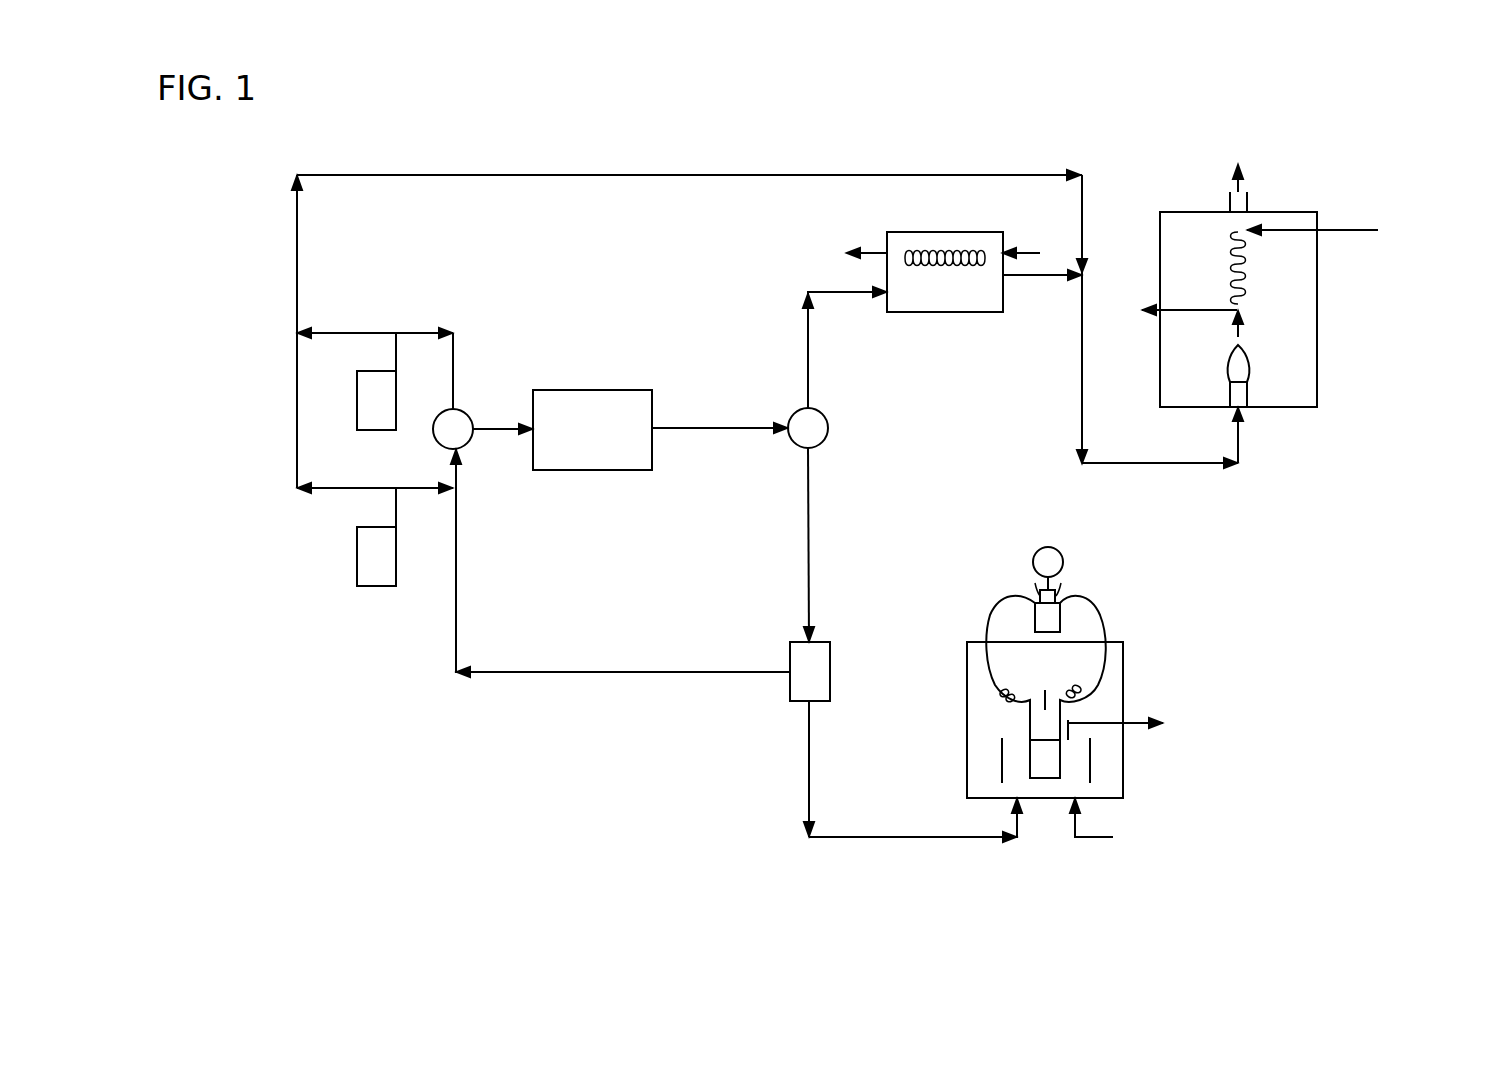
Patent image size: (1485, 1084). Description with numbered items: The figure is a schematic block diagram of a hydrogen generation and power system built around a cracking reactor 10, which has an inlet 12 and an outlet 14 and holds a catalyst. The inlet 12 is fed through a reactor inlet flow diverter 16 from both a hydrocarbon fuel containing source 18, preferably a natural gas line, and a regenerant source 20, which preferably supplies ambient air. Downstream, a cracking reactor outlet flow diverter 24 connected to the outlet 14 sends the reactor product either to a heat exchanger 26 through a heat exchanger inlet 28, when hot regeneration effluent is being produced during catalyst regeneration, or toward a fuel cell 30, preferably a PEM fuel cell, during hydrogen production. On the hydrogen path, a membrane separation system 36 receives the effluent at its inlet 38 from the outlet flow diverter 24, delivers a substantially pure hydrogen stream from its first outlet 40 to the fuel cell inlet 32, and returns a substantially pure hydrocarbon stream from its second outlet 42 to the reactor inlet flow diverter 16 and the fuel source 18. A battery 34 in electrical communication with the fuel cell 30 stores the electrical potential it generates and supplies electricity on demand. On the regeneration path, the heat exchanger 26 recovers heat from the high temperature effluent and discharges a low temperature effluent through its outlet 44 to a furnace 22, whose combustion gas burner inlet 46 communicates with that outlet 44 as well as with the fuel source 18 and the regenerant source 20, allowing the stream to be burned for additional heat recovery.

The cracking reactor 10 is at (613, 390).
The inlet 12 is at (498, 428).
The outlet 14 is at (712, 428).
The reactor inlet flow diverter 16 is at (468, 448).
The hydrocarbon fuel containing source 18 is at (357, 557).
The regenerant source 20 is at (357, 400).
The furnace 22 is at (1392, 279).
The cracking reactor outlet flow diverter 24 is at (818, 410).
The heat exchanger 26 is at (950, 232).
The heat exchanger inlet 28 is at (828, 292).
The fuel cell 30 is at (1123, 681).
The fuel cell inlet 32 is at (912, 837).
The battery 34 is at (1035, 622).
The membrane separation system 36 is at (831, 642).
The inlet 38 is at (810, 490).
The first outlet 40 is at (810, 737).
The second outlet 42 is at (652, 672).
The heat exchanger outlet 44 is at (1040, 276).
The combustion gas burner inlet 46 is at (1155, 463).